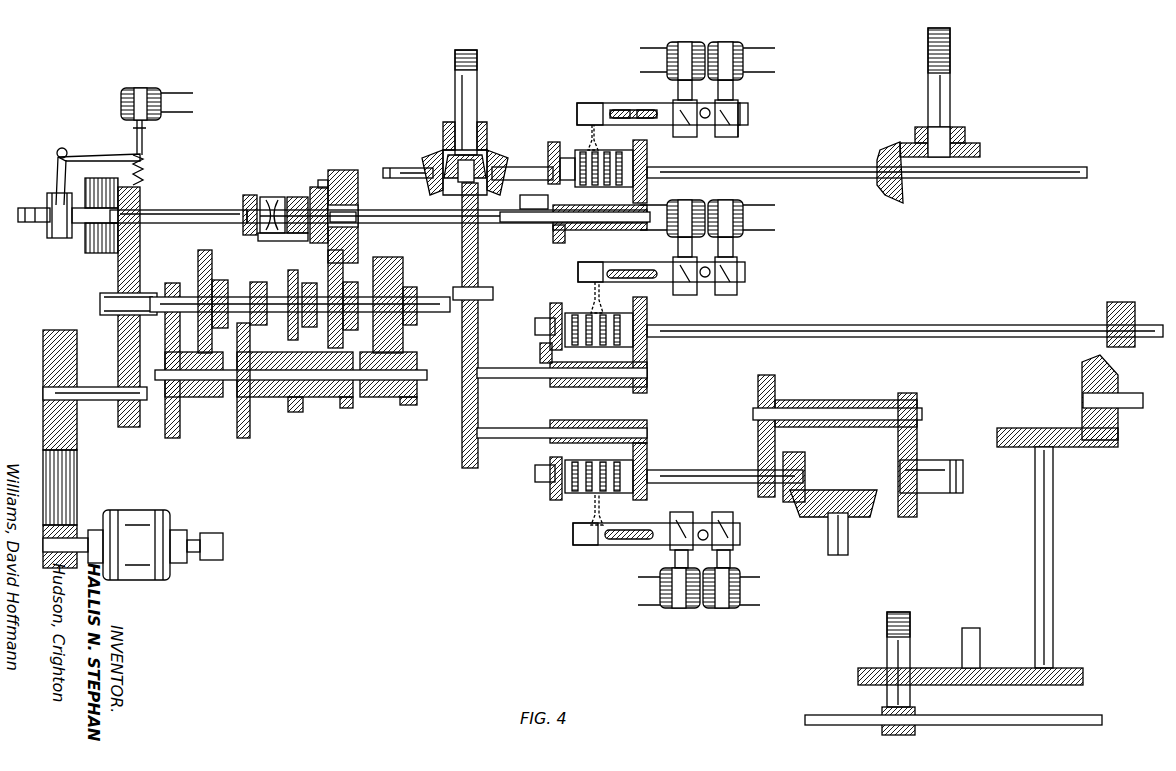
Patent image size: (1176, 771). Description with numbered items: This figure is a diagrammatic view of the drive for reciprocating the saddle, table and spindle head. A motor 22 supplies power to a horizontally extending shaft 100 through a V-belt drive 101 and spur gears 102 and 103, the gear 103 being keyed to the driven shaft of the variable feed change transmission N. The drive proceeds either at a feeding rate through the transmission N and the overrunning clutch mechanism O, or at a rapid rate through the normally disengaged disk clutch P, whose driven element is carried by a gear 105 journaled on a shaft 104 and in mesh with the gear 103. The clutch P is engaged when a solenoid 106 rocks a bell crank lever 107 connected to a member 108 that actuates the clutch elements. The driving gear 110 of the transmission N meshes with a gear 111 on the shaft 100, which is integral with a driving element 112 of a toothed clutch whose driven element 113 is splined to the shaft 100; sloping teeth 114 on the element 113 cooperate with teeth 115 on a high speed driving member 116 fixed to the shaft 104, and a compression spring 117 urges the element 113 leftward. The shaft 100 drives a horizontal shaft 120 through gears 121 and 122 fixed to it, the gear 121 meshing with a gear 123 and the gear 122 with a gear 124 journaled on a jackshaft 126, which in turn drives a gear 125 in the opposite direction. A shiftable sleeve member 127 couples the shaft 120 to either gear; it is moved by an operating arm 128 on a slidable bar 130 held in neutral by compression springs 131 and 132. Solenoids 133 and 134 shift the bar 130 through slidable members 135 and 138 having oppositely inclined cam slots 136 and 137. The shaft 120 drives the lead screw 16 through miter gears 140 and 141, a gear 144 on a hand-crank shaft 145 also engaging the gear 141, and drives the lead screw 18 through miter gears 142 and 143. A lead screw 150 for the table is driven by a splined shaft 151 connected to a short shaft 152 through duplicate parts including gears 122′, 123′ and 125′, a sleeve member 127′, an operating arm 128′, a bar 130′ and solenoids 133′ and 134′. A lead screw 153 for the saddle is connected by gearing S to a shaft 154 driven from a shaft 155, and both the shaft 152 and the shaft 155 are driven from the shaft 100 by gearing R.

The lead screw 16 is at (458, 83).
The lead screw 18 is at (938, 97).
The motor 22 is at (148, 580).
The horizontally extending shaft 100 is at (410, 216).
The V-belt drive 101 is at (77, 490).
The spur gear 102 is at (128, 427).
The spur gear 103 is at (118, 278).
The shaft 104 is at (193, 200).
The gear 105 is at (140, 193).
The solenoid 106 is at (135, 88).
The bell crank lever 107 is at (77, 152).
The member 108 is at (50, 192).
The driving gear 110 is at (330, 270).
The gear 111 is at (356, 224).
The driving element 112 is at (322, 172).
The driven element 113 is at (285, 236).
The sloping teeth 114 is at (298, 197).
The teeth 115 is at (270, 197).
The high speed driving member 116 is at (250, 195).
The compression spring 117 is at (358, 205).
The horizontal shaft 120 is at (815, 162).
The gear 121 is at (640, 235).
The gear 122 is at (555, 242).
The gear 123 is at (640, 150).
The gear 124 is at (550, 225).
The gear 125 is at (550, 160).
The jackshaft 126 is at (522, 205).
The shiftable sleeve member 127 is at (588, 150).
The operating arm 128 is at (590, 108).
The slidable bar 130 is at (608, 110).
The compression spring 131 is at (614, 118).
The compression spring 132 is at (645, 118).
The electric solenoid 133 is at (728, 42).
The electric solenoid 134 is at (683, 42).
The slidable member 135 is at (740, 137).
The inclined cam slot 136 is at (745, 128).
The cam slot 137 is at (726, 137).
The slidable member 138 is at (685, 137).
The miter gear 140 is at (500, 152).
The miter gear 141 is at (490, 135).
The miter gear 142 is at (888, 157).
The miter gear 143 is at (967, 143).
The gear 144 is at (440, 190).
The shaft 145 is at (408, 168).
The lead screw 150 is at (887, 637).
The splined shaft 151 is at (876, 320).
The short shaft 152 is at (530, 382).
The lead screw 153 is at (935, 493).
The shaft 154 is at (705, 475).
The shaft 155 is at (530, 442).
The gear 122′ is at (555, 390).
The gear 123′ is at (648, 350).
The gear 125′ is at (548, 320).
The shiftable sleeve member 127′ is at (591, 313).
The operating arm 128′ is at (590, 270).
The slidable bar 130′ is at (660, 282).
The electric solenoid 133′ is at (743, 220).
The electric solenoid 134′ is at (672, 219).
The disk clutch P is at (90, 262).
The overrunning clutch mechanism O is at (344, 164).
The variable feed change transmission N is at (313, 398).
The gearing R is at (458, 330).
The gearing S is at (872, 441).
The shaft G is at (1063, 577).